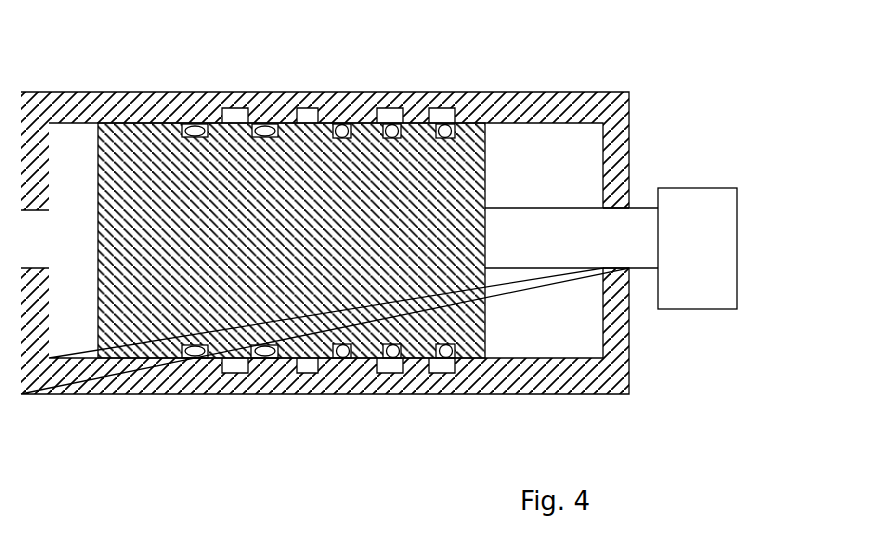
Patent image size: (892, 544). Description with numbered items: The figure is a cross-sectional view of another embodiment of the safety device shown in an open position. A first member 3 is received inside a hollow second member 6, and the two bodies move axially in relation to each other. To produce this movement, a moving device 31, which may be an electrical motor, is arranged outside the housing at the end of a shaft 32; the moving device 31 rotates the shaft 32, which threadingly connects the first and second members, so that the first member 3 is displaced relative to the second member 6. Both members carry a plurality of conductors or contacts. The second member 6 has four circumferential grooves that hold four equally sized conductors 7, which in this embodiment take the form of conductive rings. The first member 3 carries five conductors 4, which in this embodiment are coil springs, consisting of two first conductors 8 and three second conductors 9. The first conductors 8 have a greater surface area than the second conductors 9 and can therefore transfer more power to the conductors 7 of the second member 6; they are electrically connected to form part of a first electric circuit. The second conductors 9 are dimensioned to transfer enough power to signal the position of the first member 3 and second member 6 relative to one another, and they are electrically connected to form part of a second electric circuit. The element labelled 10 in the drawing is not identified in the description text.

The first member 3 is at (105, 145).
The conductors 4 is at (181, 126).
The second member 6 is at (562, 112).
The conductors 7 is at (242, 118).
The first conductors 8 is at (203, 362).
The second conductors 9 is at (376, 360).
The rod guide 10 is at (600, 208).
The moving device 31 is at (685, 283).
The shaft 32 is at (547, 268).